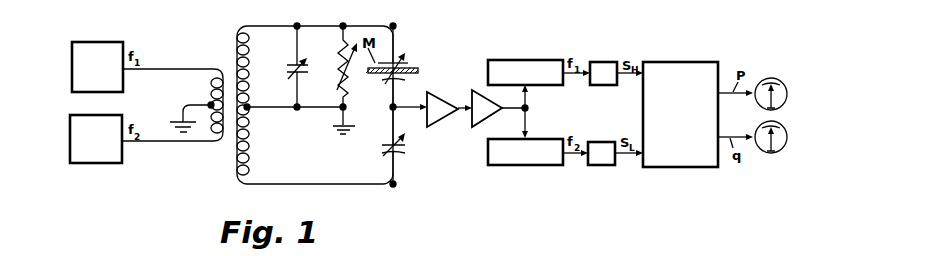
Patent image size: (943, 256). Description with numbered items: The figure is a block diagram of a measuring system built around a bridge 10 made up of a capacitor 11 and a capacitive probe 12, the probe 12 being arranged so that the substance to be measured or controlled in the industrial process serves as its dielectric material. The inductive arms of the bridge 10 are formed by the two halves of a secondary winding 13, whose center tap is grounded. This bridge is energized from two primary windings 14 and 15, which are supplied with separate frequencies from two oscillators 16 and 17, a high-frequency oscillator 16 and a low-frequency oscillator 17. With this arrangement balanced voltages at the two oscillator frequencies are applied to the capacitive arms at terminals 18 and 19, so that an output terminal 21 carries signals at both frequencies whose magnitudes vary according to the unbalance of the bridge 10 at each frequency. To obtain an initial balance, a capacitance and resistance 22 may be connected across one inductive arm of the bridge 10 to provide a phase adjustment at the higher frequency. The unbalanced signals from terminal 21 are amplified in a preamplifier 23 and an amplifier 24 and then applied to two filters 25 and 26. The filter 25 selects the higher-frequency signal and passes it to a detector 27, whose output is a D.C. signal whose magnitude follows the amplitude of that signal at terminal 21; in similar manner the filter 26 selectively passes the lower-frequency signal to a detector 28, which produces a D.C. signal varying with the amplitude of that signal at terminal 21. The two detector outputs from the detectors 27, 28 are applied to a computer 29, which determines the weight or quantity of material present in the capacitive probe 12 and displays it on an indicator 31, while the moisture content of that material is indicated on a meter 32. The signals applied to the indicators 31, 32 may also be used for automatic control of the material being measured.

The bridge 10 is at (320, 130).
The capacitor 11 is at (380, 145).
The capacitive probe 12 is at (402, 62).
The secondary winding 13 is at (248, 135).
The primary winding 14 is at (210, 82).
The primary winding 15 is at (212, 129).
The oscillator 16 is at (92, 42).
The oscillator 17 is at (97, 165).
The terminal 18 is at (395, 25).
The terminal 19 is at (395, 187).
The output terminal 21 is at (391, 107).
The capacitance and resistance 22 is at (332, 84).
The preamplifier 23 is at (443, 124).
The amplifier 24 is at (472, 93).
The filter 25 is at (522, 60).
The filter 26 is at (535, 165).
The detector 27 is at (605, 62).
The detector 28 is at (603, 165).
The computer 29 is at (683, 62).
The indicator 31 is at (772, 78).
The meter 32 is at (772, 154).